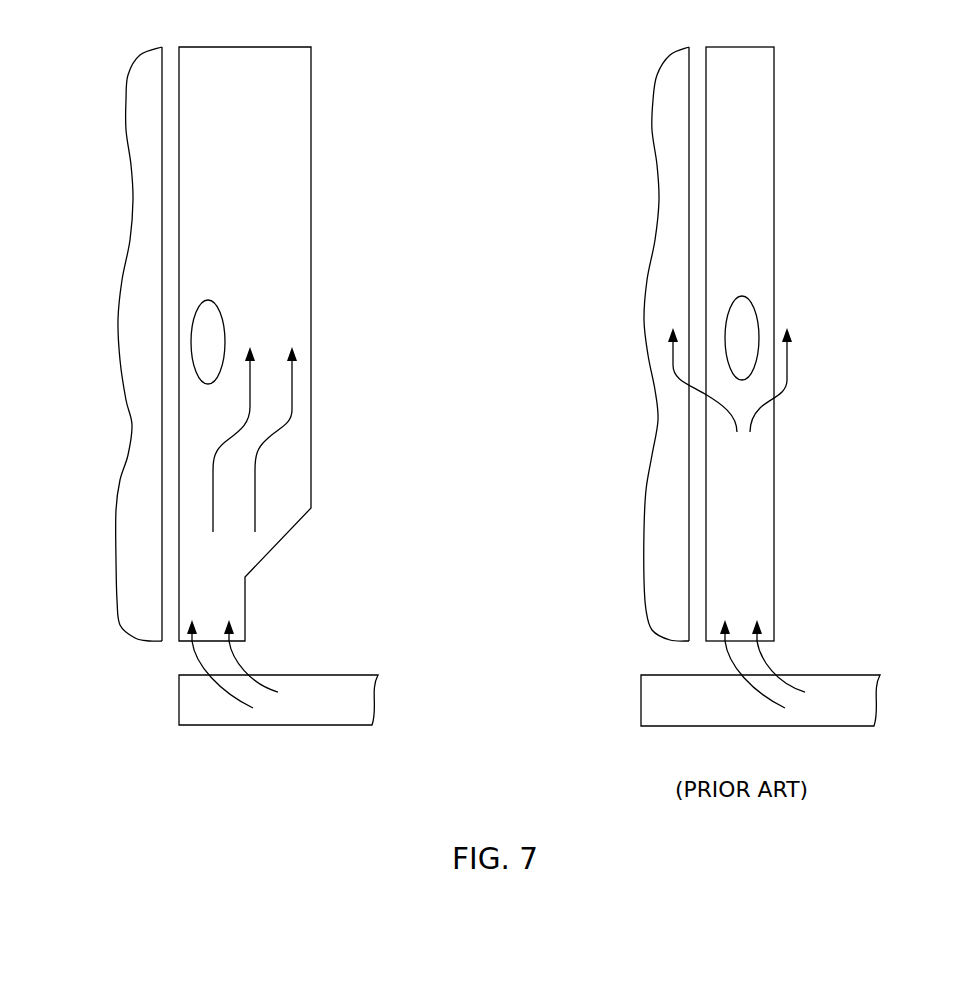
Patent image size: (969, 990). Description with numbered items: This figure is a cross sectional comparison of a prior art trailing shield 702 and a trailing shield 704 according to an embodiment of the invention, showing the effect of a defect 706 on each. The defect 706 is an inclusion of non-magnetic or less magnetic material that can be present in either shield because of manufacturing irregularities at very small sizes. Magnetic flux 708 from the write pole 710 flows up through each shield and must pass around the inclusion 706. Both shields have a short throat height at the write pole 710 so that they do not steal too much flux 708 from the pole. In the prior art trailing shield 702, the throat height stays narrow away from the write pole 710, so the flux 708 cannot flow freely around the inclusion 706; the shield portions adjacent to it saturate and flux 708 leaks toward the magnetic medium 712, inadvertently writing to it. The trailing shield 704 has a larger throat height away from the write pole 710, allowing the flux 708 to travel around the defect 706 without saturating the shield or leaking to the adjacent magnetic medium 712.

The prior art trailing shield 702 is at (750, 108).
The trailing shield 704 is at (287, 107).
The defect 706 is at (215, 322).
The magnetic flux 708 is at (295, 375).
The write pole 710 is at (197, 707).
The magnetic medium 712 is at (135, 162).